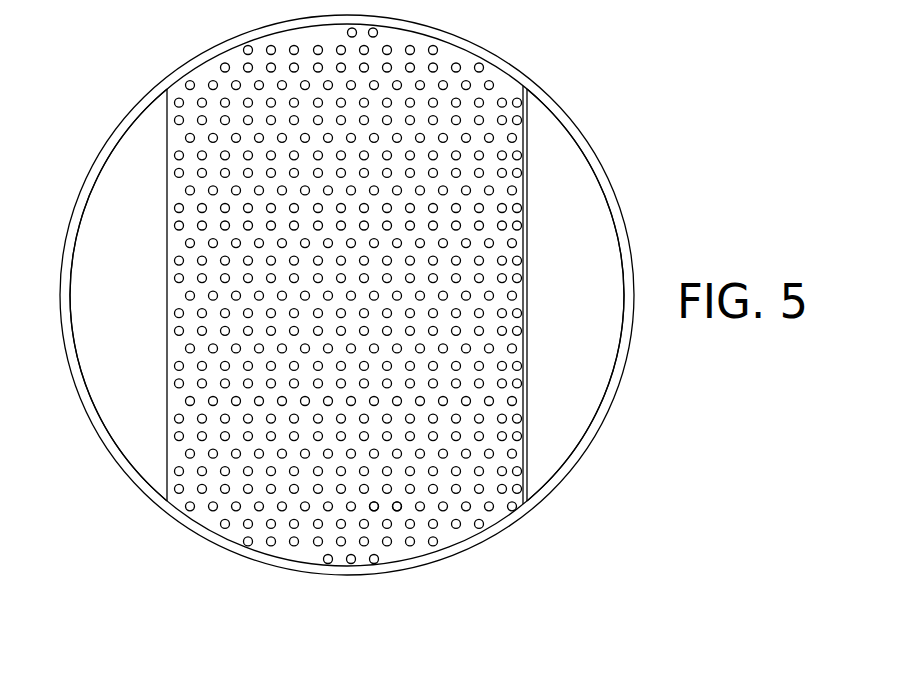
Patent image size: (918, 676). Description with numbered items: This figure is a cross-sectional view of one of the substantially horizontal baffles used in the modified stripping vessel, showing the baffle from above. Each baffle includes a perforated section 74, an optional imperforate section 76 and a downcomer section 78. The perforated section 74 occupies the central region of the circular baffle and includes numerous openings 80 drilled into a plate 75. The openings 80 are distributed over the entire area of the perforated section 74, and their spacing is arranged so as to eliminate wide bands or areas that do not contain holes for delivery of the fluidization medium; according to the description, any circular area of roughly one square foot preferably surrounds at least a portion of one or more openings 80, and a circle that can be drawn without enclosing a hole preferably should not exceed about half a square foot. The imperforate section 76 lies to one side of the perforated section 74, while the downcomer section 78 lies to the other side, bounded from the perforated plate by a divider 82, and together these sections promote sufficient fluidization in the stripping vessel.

The perforated section 74 is at (290, 547).
The plate 75 is at (393, 510).
The imperforate section 76 is at (143, 147).
The downcomer section 78 is at (563, 153).
The openings 80 is at (499, 509).
The divider bar 82 is at (527, 255).